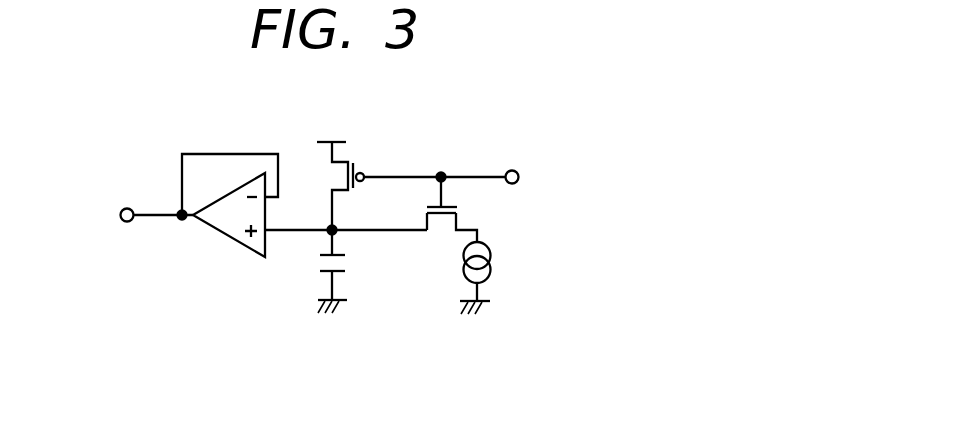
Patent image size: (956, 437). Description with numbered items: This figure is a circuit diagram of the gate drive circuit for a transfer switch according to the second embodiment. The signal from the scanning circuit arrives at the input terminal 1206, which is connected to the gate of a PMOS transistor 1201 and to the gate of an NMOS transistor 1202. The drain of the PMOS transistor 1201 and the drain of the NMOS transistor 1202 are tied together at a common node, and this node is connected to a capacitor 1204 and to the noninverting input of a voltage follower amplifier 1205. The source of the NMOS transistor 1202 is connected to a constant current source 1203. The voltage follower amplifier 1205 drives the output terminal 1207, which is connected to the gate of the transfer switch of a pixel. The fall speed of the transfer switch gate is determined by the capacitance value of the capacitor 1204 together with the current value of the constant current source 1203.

The PMOS transistor 1201 is at (352, 152).
The NMOS transistor 1202 is at (448, 229).
The constant current source 1203 is at (498, 276).
The capacitor 1204 is at (323, 276).
The voltage follower amplifier 1205 is at (203, 113).
The input terminal 1206 is at (518, 169).
The output terminal 1207 is at (120, 213).